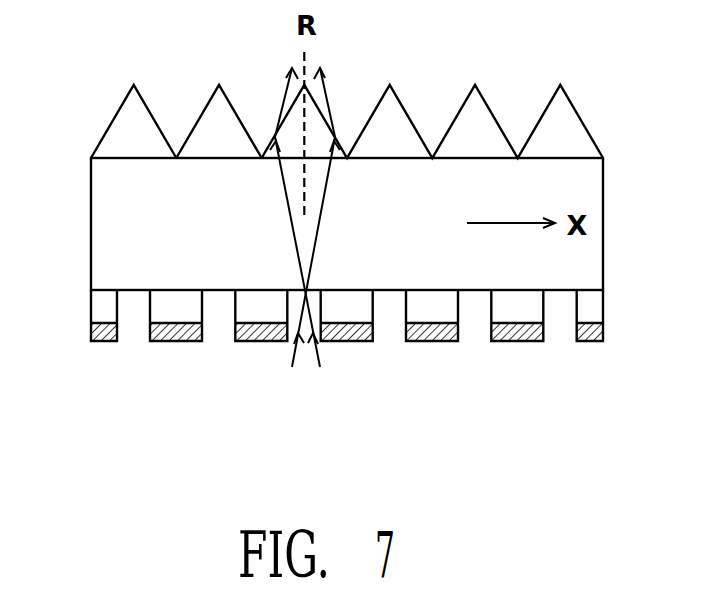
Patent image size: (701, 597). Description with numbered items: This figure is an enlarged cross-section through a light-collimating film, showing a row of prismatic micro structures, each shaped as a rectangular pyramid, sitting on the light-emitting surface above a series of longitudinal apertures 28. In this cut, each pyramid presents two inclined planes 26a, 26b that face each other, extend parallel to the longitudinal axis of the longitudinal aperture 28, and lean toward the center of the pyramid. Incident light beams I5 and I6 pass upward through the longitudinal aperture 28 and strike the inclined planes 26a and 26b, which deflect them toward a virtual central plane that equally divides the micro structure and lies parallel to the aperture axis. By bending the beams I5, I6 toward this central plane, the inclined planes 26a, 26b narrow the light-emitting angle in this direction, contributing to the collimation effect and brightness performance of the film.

The inclined plane 26a is at (112, 120).
The inclined plane 26b is at (155, 118).
The longitudinal aperture 28 is at (138, 322).
The incident light beam I5 is at (306, 233).
The incident light beam I6 is at (305, 233).